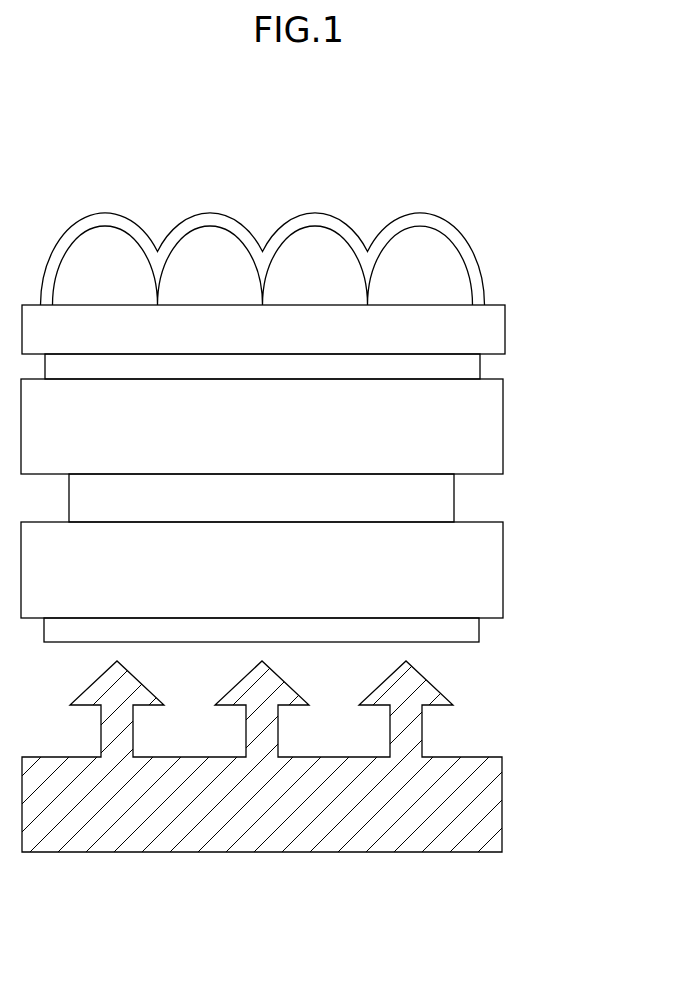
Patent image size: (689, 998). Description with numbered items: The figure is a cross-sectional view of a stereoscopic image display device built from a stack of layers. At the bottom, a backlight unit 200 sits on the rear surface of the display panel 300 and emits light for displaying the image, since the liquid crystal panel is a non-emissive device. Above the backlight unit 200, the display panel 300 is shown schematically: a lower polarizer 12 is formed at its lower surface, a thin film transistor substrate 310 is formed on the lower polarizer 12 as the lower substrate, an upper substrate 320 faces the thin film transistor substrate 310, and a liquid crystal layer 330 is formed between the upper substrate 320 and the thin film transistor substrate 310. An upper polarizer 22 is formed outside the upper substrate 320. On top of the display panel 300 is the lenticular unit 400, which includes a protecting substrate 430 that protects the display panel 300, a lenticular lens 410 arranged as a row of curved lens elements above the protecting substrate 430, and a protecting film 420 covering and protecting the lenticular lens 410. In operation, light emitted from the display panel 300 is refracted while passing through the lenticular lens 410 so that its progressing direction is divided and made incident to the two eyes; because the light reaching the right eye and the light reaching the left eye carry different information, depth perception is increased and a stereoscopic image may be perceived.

The lenticular unit 400 is at (327, 282).
The lenticular lens 410 is at (435, 262).
The protecting film 420 is at (473, 272).
The protecting substrate 430 is at (303, 329).
The upper polarizer 22 is at (466, 366).
The display panel 300 is at (329, 498).
The upper substrate 320 is at (485, 428).
The liquid crystal layer 330 is at (438, 501).
The thin film transistor substrate 310 is at (300, 570).
The lower polarizer 12 is at (470, 635).
The backlight unit 200 is at (488, 802).